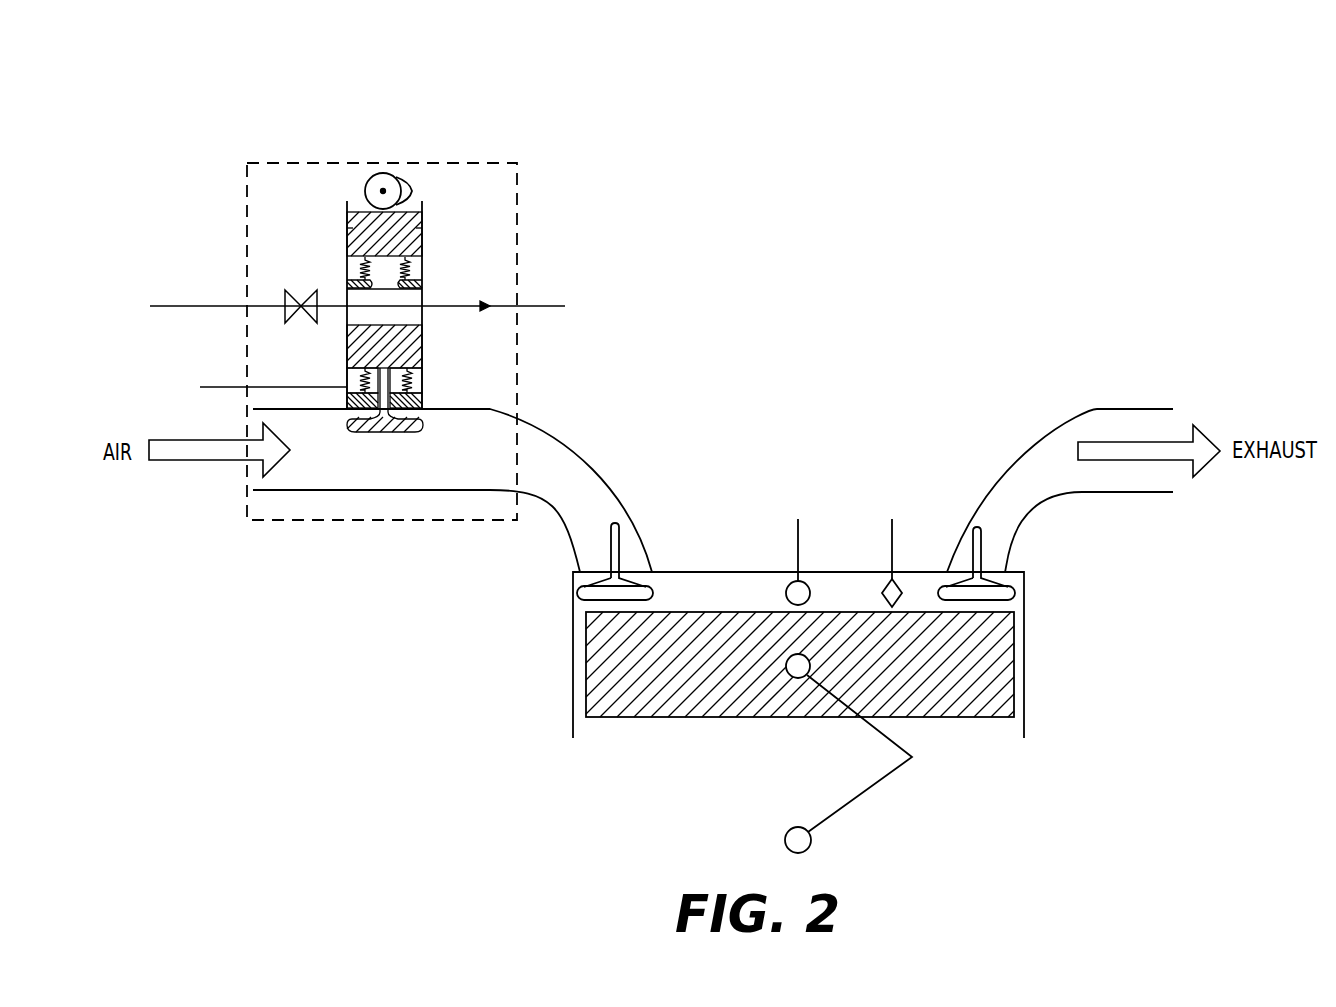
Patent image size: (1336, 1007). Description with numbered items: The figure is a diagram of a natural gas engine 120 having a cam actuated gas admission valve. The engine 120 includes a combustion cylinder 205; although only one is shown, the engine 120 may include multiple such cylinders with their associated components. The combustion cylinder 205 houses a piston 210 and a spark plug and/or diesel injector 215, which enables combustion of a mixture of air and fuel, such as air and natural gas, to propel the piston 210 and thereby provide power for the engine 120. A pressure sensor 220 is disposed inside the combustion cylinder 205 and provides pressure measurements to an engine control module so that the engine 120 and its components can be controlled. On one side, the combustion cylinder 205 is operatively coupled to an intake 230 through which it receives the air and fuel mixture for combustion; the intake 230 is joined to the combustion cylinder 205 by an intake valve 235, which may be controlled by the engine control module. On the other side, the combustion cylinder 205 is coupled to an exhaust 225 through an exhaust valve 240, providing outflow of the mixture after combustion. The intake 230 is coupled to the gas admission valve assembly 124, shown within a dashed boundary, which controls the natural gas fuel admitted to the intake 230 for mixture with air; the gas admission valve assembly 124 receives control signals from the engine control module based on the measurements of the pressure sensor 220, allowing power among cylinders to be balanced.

The engine 120 is at (157, 60).
The gas admission valve assembly 124 is at (303, 162).
The combustion cylinder 205 is at (572, 675).
The piston 210 is at (672, 719).
The spark plug and/or diesel injector 215 is at (797, 542).
The pressure sensor 220 is at (891, 542).
The exhaust 225 is at (1142, 408).
The intake 230 is at (597, 472).
The intake valve 235 is at (577, 594).
The exhaust valve 240 is at (1015, 594).